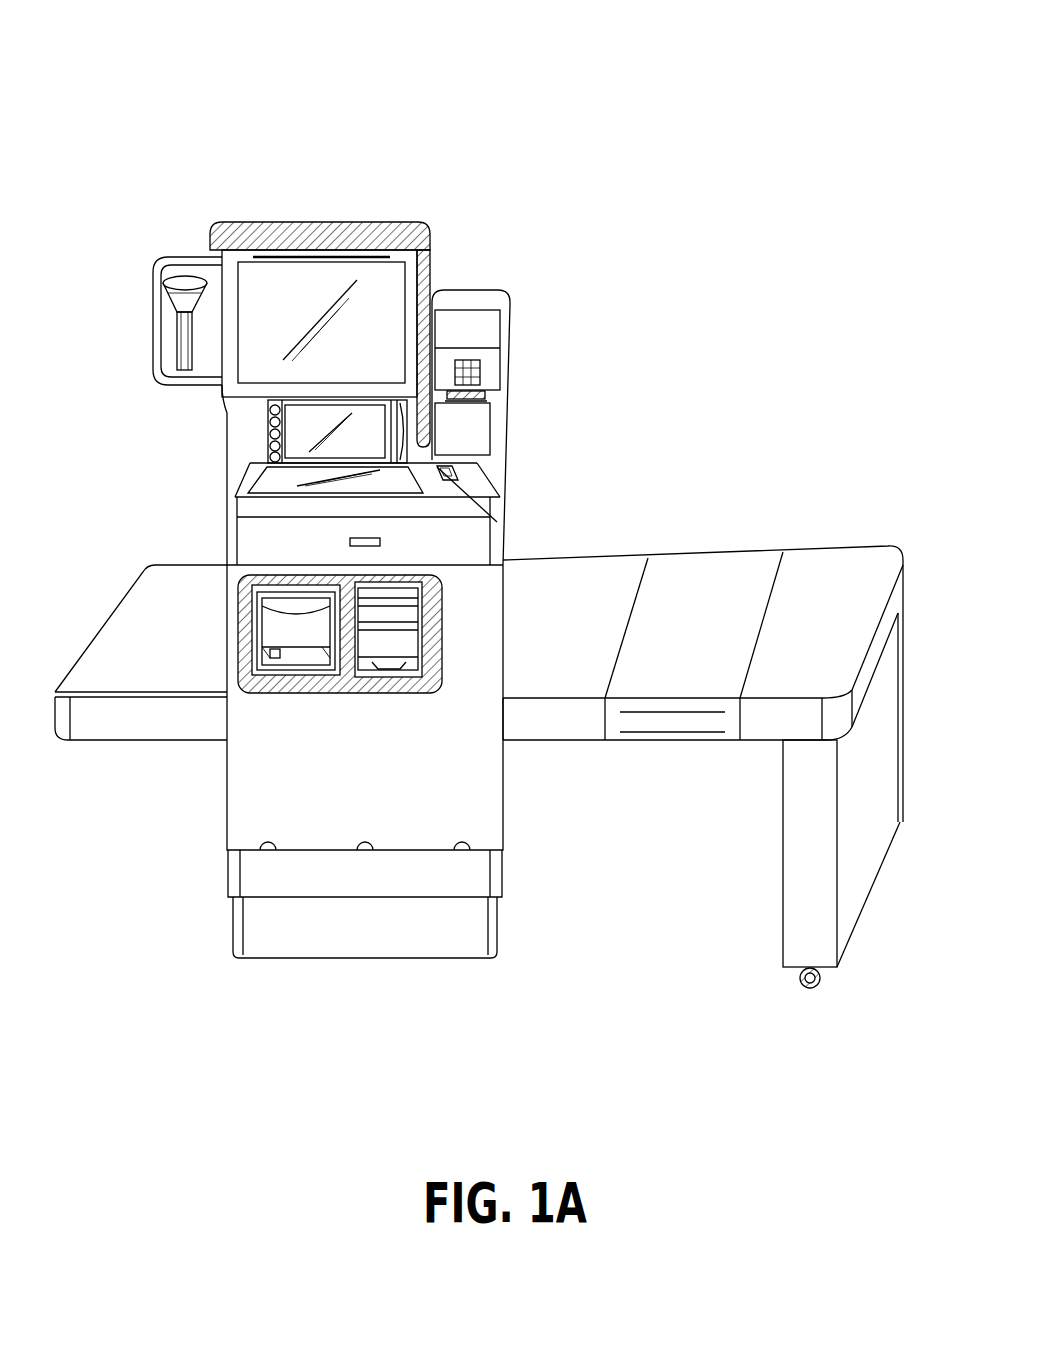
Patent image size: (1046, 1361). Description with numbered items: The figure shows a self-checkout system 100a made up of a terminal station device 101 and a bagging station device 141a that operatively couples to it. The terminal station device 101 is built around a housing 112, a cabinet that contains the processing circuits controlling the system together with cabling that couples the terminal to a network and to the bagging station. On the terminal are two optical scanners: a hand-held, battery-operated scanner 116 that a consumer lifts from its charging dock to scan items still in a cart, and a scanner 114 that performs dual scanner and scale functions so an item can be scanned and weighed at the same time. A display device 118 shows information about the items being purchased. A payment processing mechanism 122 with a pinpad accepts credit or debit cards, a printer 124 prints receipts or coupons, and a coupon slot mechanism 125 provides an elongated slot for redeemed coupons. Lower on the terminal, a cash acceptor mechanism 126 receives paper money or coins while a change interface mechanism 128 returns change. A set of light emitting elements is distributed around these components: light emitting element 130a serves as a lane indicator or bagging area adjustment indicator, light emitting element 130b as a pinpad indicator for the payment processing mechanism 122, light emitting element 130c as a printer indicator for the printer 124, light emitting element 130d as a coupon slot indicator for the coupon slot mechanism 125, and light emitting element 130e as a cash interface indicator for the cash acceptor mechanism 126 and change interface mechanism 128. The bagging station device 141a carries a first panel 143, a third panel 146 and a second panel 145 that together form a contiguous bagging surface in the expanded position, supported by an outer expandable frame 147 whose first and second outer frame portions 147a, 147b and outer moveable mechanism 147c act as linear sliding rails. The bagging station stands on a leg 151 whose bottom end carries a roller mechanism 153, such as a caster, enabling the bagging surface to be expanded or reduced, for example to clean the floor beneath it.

The self-checkout system 100a is at (150, 68).
The terminal station device 101 is at (179, 185).
The light emitting element 130a is at (338, 221).
The light emitting element 130b is at (431, 280).
The optical scanner 116 is at (183, 342).
The display device 118 is at (392, 366).
The payment processing mechanism 122 is at (493, 327).
The light emitting element 130c is at (475, 401).
The printer 124 is at (483, 430).
The coupon slot mechanism 125 is at (457, 468).
The optical scanner 114 is at (265, 436).
The light emitting element 130d is at (503, 517).
The bagging station device 141a is at (860, 490).
The first panel 143 is at (590, 620).
The third panel 146 is at (715, 636).
The second panel 145 is at (837, 648).
The change interface mechanism 128 is at (410, 613).
The cash acceptor mechanism 126 is at (273, 630).
The light emitting element 130e is at (287, 692).
The housing 112 is at (390, 805).
The outer expandable frame 147 is at (657, 804).
The first outer frame portion 147a is at (563, 742).
The second outer frame portion 147b is at (772, 732).
The outer moveable mechanism 147c is at (675, 733).
The leg 151 is at (783, 867).
The roller mechanism 153 is at (810, 988).